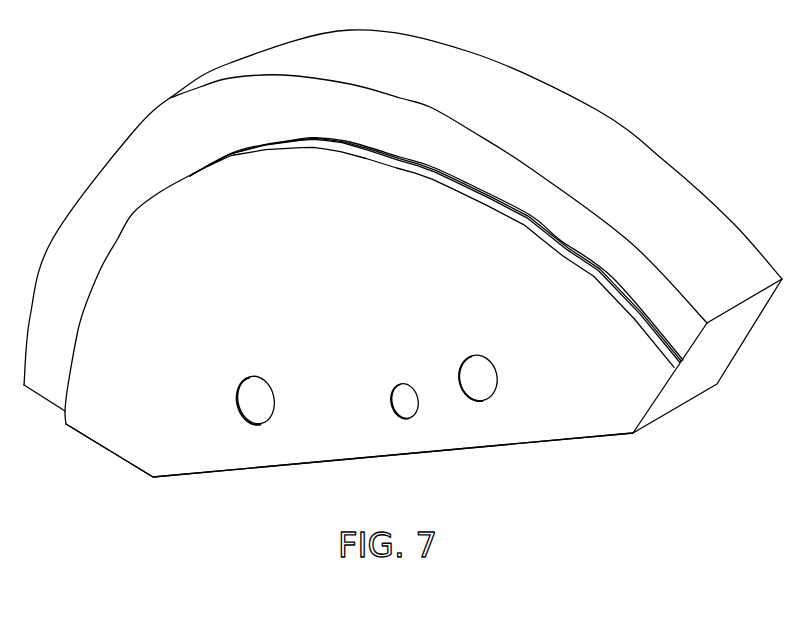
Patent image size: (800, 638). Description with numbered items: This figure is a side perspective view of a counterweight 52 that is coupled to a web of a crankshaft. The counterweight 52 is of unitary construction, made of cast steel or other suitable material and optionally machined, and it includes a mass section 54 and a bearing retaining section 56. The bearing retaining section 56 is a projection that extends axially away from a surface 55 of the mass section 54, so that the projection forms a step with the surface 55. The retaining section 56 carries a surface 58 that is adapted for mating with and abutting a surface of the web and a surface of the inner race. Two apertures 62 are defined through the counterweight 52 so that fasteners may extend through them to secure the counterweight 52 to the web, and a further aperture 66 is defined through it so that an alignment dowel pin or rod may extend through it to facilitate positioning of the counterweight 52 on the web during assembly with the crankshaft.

The counterweight 52 is at (396, 253).
The mass section 54 is at (75, 225).
The surface of mass section 55 is at (143, 137).
The bearing retaining section 56 is at (107, 313).
The surface of bearing retaining section 58 is at (334, 293).
The apertures 62 is at (252, 400).
The apertures 66 is at (402, 403).